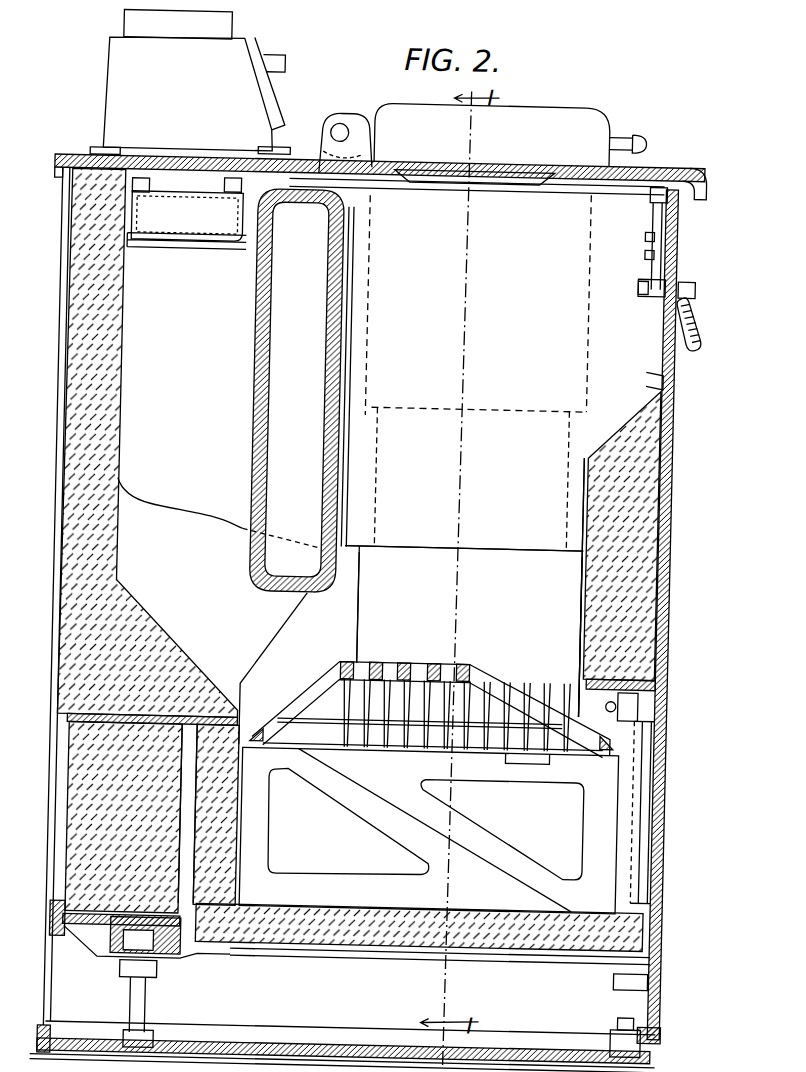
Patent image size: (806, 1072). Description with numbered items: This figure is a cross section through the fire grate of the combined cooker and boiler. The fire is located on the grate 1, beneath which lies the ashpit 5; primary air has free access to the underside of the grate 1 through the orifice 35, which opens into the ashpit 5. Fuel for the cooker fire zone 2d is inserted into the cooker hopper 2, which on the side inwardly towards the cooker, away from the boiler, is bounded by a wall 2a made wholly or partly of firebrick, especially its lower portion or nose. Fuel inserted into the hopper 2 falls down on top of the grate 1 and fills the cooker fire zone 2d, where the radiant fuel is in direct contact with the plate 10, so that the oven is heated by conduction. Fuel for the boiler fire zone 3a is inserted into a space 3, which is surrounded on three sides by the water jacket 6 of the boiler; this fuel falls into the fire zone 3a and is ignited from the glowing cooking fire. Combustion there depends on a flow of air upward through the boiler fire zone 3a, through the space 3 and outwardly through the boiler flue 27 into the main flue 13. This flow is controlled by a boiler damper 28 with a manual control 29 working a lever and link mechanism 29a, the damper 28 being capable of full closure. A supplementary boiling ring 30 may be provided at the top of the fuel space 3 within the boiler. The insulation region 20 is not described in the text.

The grate 1 is at (417, 654).
The cooker hopper 2 is at (478, 305).
The wall 2a is at (433, 519).
The cooker fire zone 2d is at (469, 634).
The space 3 is at (153, 442).
The boiler fire zone 3a is at (263, 668).
The ashpit 5 is at (428, 830).
The water jacket 6 is at (186, 527).
The plate 10 is at (568, 609).
The main flue 13 is at (212, 16).
The insulation block 20 is at (608, 503).
The boiler flue 27 is at (177, 245).
The boiler damper 28 is at (207, 218).
The manual control 29 is at (704, 334).
The lever and link mechanism 29a is at (666, 226).
The supplementary boiling ring 30 is at (188, 157).
The orifice 35 is at (675, 796).